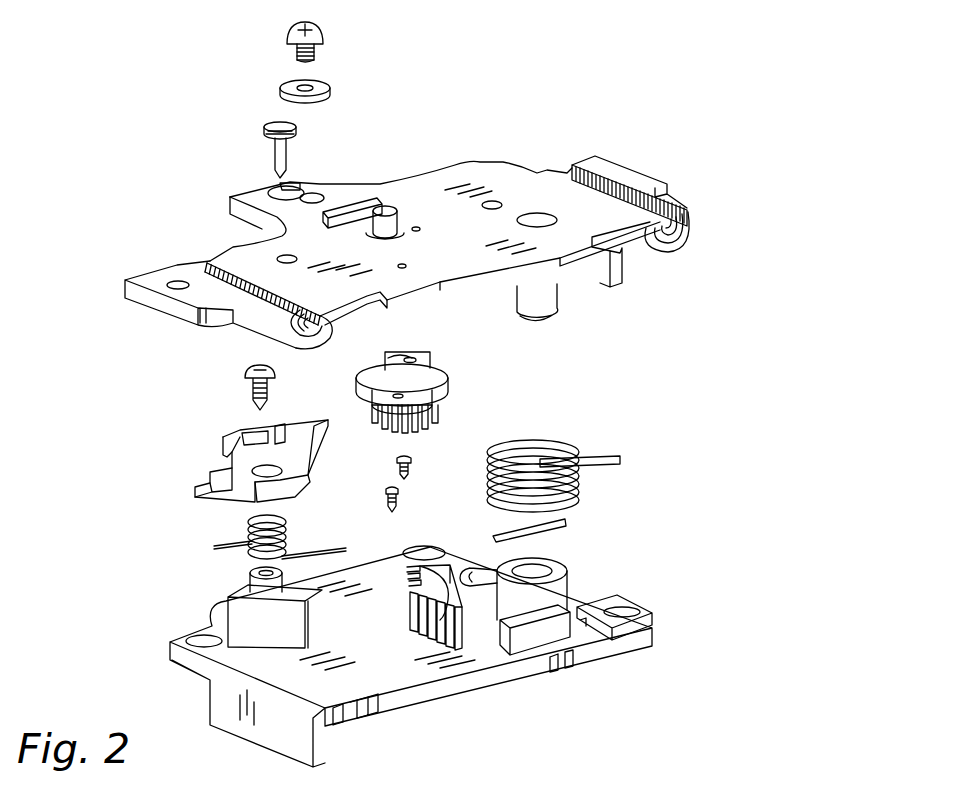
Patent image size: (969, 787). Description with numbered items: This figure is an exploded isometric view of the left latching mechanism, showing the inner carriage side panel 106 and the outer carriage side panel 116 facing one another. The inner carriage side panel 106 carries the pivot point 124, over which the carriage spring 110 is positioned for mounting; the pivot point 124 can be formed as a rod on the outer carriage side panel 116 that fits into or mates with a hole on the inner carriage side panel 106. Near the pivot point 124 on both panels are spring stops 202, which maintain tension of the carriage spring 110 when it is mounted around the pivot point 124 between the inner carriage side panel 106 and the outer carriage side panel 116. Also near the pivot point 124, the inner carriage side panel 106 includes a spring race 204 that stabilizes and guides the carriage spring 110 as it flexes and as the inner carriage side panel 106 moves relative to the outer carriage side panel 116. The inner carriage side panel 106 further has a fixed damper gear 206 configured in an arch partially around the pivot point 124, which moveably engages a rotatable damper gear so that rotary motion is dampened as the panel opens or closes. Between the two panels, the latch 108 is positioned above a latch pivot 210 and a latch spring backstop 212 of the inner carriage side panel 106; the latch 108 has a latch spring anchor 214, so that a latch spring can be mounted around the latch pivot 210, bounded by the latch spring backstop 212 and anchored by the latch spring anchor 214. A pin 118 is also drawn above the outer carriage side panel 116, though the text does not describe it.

The inner carriage side panel 106 is at (400, 682).
The latch 108 is at (250, 452).
The carriage spring 110 is at (580, 432).
The outer carriage side panel 116 is at (612, 218).
The pivot pin 118 is at (275, 160).
The pivot point 124 is at (558, 565).
The spring stops 202 is at (598, 273).
The spring race 204 is at (578, 607).
The fixed damper gear 206 is at (458, 633).
The latch pivot 210 is at (250, 583).
The latch spring backstop 212 is at (240, 620).
The latch spring anchor 214 is at (210, 466).